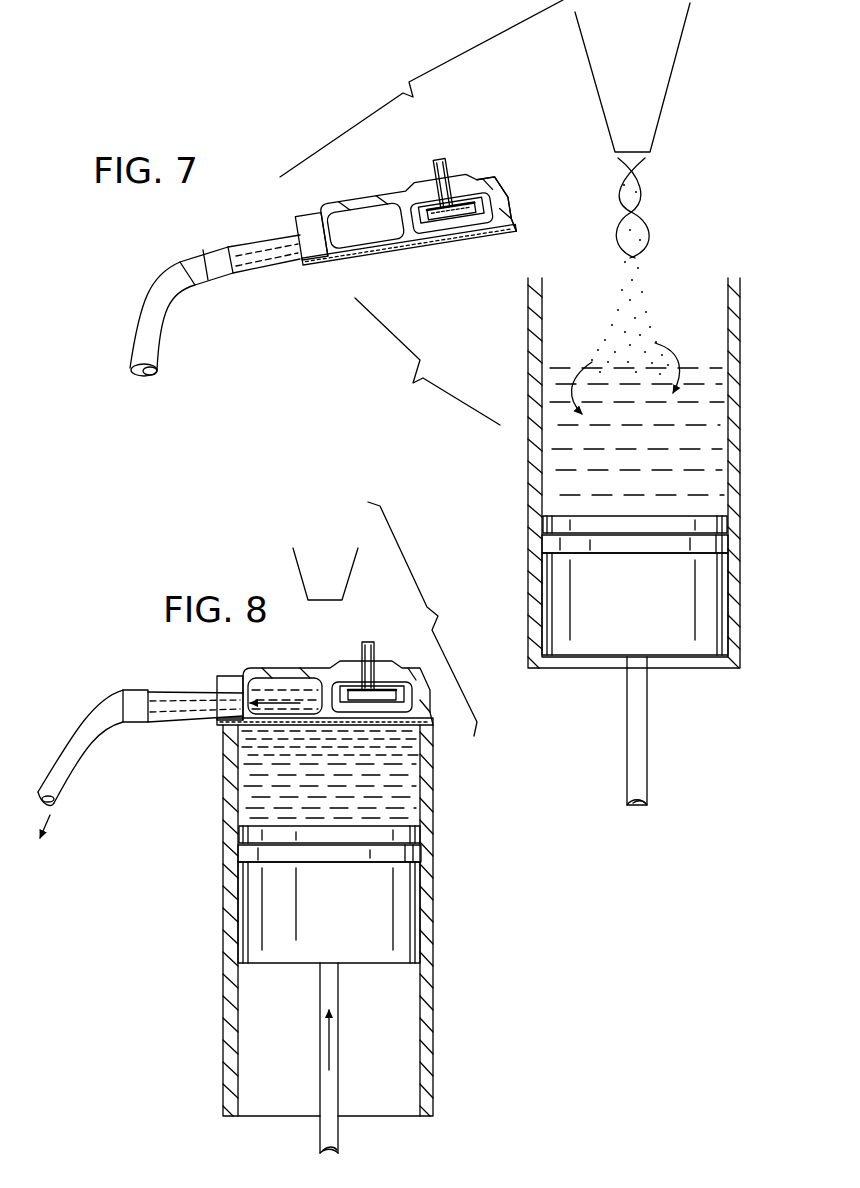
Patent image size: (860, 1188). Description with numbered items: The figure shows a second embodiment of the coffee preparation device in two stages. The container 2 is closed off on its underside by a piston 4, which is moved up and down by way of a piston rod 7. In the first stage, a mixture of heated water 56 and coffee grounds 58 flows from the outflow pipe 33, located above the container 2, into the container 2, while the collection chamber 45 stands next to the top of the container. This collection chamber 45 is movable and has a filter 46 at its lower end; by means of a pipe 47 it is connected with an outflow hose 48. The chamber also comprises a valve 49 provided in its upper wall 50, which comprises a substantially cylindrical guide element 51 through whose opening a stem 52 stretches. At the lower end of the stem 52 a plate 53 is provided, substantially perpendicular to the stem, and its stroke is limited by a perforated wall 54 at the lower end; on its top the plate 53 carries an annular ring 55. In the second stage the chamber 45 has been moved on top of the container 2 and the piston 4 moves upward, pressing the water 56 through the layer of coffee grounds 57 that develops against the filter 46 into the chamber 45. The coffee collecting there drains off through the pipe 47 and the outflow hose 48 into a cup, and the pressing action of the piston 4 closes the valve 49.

In FIG. 7, the container 2 is at (530, 396).
In FIG. 8, the container 2 is at (427, 932).
In FIG. 7, the piston 4 is at (555, 577).
In FIG. 8, the piston 4 is at (392, 894).
In FIG. 7, the piston rod 7 is at (640, 713).
In FIG. 8, the piston rod 7 is at (336, 1130).
In FIG. 7, the outflow pipe 33 is at (648, 150).
In FIG. 8, the outflow pipe 33 is at (343, 575).
In FIG. 7, the collection chamber 45 is at (418, 214).
In FIG. 8, the collection chamber 45 is at (292, 680).
In FIG. 7, the filter 46 is at (409, 244).
In FIG. 8, the filter 46 is at (312, 718).
In FIG. 7, the pipe 47 is at (255, 245).
In FIG. 8, the pipe 47 is at (183, 690).
In FIG. 7, the outflow hose 48 is at (186, 342).
In FIG. 8, the outflow hose 48 is at (88, 728).
In FIG. 7, the valve 49 is at (468, 158).
In FIG. 8, the valve 49 is at (381, 658).
In FIG. 7, the upper wall 50 is at (311, 237).
In FIG. 7, the guide element 51 is at (451, 210).
In FIG. 7, the stem 52 is at (451, 210).
In FIG. 7, the plate 53 is at (451, 210).
In FIG. 7, the perforated wall 54 is at (452, 213).
In FIG. 7, the annular ring 55 is at (497, 205).
In FIG. 8, the heated water 56 is at (372, 783).
In FIG. 8, the layer of coffee grounds 57 is at (385, 731).
In FIG. 8, the coffee grounds 58 is at (268, 714).